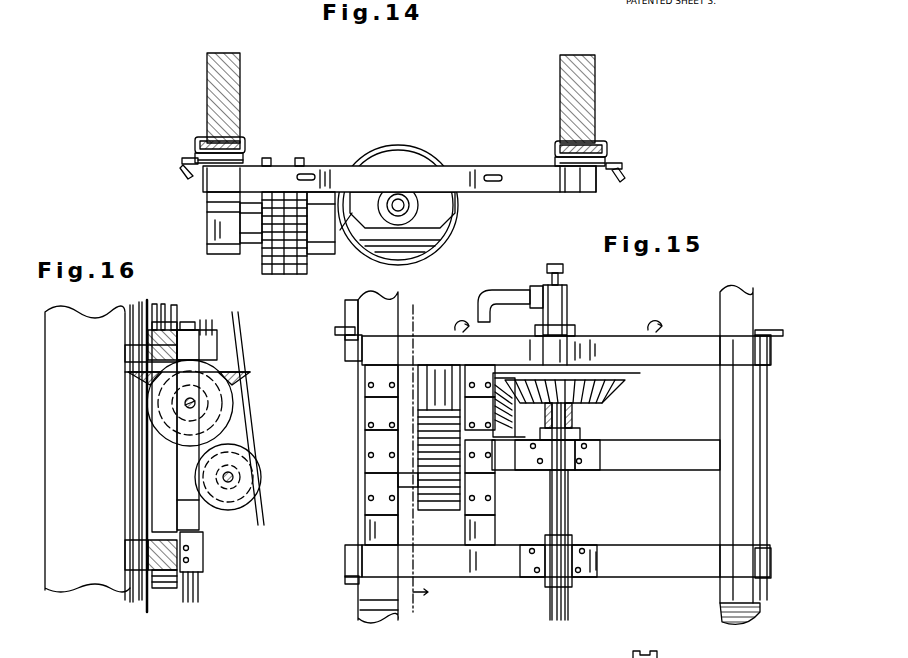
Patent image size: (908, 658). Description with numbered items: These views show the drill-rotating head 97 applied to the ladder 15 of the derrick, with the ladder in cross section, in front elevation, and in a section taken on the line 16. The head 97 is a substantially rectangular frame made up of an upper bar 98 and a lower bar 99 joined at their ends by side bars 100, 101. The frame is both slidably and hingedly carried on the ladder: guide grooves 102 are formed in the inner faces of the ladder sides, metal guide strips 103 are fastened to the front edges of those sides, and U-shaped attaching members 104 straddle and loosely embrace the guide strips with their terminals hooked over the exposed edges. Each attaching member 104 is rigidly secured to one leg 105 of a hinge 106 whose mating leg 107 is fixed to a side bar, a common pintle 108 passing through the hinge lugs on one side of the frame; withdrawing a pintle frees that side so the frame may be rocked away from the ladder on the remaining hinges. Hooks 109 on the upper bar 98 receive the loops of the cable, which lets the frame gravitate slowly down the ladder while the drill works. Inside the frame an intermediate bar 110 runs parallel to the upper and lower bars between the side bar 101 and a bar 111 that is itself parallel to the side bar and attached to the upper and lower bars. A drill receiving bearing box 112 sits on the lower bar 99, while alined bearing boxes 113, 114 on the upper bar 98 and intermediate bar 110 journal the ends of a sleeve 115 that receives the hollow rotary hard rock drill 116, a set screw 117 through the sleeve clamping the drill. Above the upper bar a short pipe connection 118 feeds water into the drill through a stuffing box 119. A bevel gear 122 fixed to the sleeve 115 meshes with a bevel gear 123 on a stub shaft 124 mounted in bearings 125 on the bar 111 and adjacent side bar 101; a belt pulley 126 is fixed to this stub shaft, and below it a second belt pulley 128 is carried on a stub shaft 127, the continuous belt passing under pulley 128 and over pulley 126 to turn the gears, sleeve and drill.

In FIG. 14, the ladder 15 is at (241, 85).
In FIG. 16, the ladder 15 is at (62, 578).
In FIG. 15, the ladder 15 is at (368, 613).
In FIG. 15, the section line 16— 16 is at (417, 458).
In FIG. 14, the head 97 is at (488, 159).
In FIG. 16, the head 97 is at (240, 503).
In FIG. 15, the head 97 is at (513, 584).
In FIG. 14, the upper bar 98 is at (522, 192).
In FIG. 16, the upper bar 98 is at (200, 346).
In FIG. 15, the upper bar 98 is at (661, 364).
In FIG. 16, the lower bar 99 is at (204, 561).
In FIG. 15, the lower bar 99 is at (656, 549).
In FIG. 14, the side bar 100 is at (216, 206).
In FIG. 15, the side bar 100 is at (376, 526).
In FIG. 14, the side bar 101 is at (567, 172).
In FIG. 16, the side bar 101 is at (176, 316).
In FIG. 15, the side bar 101 is at (726, 498).
In FIG. 14, the guide grooves 102 is at (222, 139).
In FIG. 16, the guide grooves 102 is at (131, 489).
In FIG. 14, the metal guide strips 103 is at (201, 143).
In FIG. 16, the metal guide strips 103 is at (141, 592).
In FIG. 15, the metal guide strips 103 is at (359, 313).
In FIG. 14, the attaching members 104 is at (199, 138).
In FIG. 16, the attaching members 104 is at (132, 356).
In FIG. 14, the hinge leg 105 is at (245, 161).
In FIG. 16, the hinge leg 105 is at (136, 378).
In FIG. 14, the hinge 106 is at (184, 159).
In FIG. 15, the hinge 106 is at (346, 341).
In FIG. 14, the mating hinge leg 107 is at (206, 173).
In FIG. 16, the mating hinge leg 107 is at (149, 341).
In FIG. 15, the mating hinge leg 107 is at (363, 350).
In FIG. 14, the pintle 108 is at (184, 172).
In FIG. 15, the pintle 108 is at (356, 461).
In FIG. 14, the hooks 109 is at (306, 172).
In FIG. 16, the hooks 109 is at (155, 306).
In FIG. 15, the hooks 109 is at (461, 319).
In FIG. 15, the intermediate bar 110 is at (626, 471).
In FIG. 14, the bar 111 is at (334, 197).
In FIG. 16, the bar 111 is at (160, 484).
In FIG. 15, the bar 111 is at (482, 526).
In FIG. 16, the drill receiving bearing box 112 is at (206, 554).
In FIG. 15, the drill receiving bearing box 112 is at (573, 549).
In FIG. 14, the bearing box 113 is at (446, 222).
In FIG. 16, the bearing box 113 is at (240, 332).
In FIG. 15, the bearing box 113 is at (585, 340).
In FIG. 15, the bearing box 114 is at (581, 435).
In FIG. 15, the sleeve 115 is at (548, 418).
In FIG. 14, the rotary hard rock drill 116 is at (400, 200).
In FIG. 16, the rotary hard rock drill 116 is at (197, 592).
In FIG. 15, the rotary hard rock drill 116 is at (562, 501).
In FIG. 15, the set screw 117 is at (575, 413).
In FIG. 15, the short pipe connection 118 is at (511, 296).
In FIG. 14, the stuffing box 119 is at (395, 211).
In FIG. 16, the stuffing box 119 is at (203, 332).
In FIG. 15, the stuffing box 119 is at (571, 322).
In FIG. 14, the bevel gear 122 is at (396, 146).
In FIG. 16, the bevel gear 122 is at (246, 383).
In FIG. 15, the bevel gear 122 is at (611, 393).
In FIG. 14, the bevel gear 123 is at (341, 231).
In FIG. 16, the bevel gear 123 is at (232, 411).
In FIG. 15, the bevel gear 123 is at (505, 440).
In FIG. 14, the stub shaft 124 is at (272, 184).
In FIG. 16, the stub shaft 124 is at (186, 405).
In FIG. 15, the stub shaft 124 is at (382, 438).
In FIG. 14, the bearings 125 is at (262, 170).
In FIG. 15, the bearings 125 is at (481, 383).
In FIG. 14, the belt pulley 126 is at (286, 192).
In FIG. 16, the belt pulley 126 is at (212, 373).
In FIG. 15, the belt pulley 126 is at (438, 380).
In FIG. 14, the stub shaft 127 is at (250, 244).
In FIG. 16, the stub shaft 127 is at (229, 483).
In FIG. 15, the stub shaft 127 is at (396, 486).
In FIG. 14, the second belt pulley 128 is at (276, 264).
In FIG. 16, the second belt pulley 128 is at (262, 472).
In FIG. 15, the second belt pulley 128 is at (436, 502).